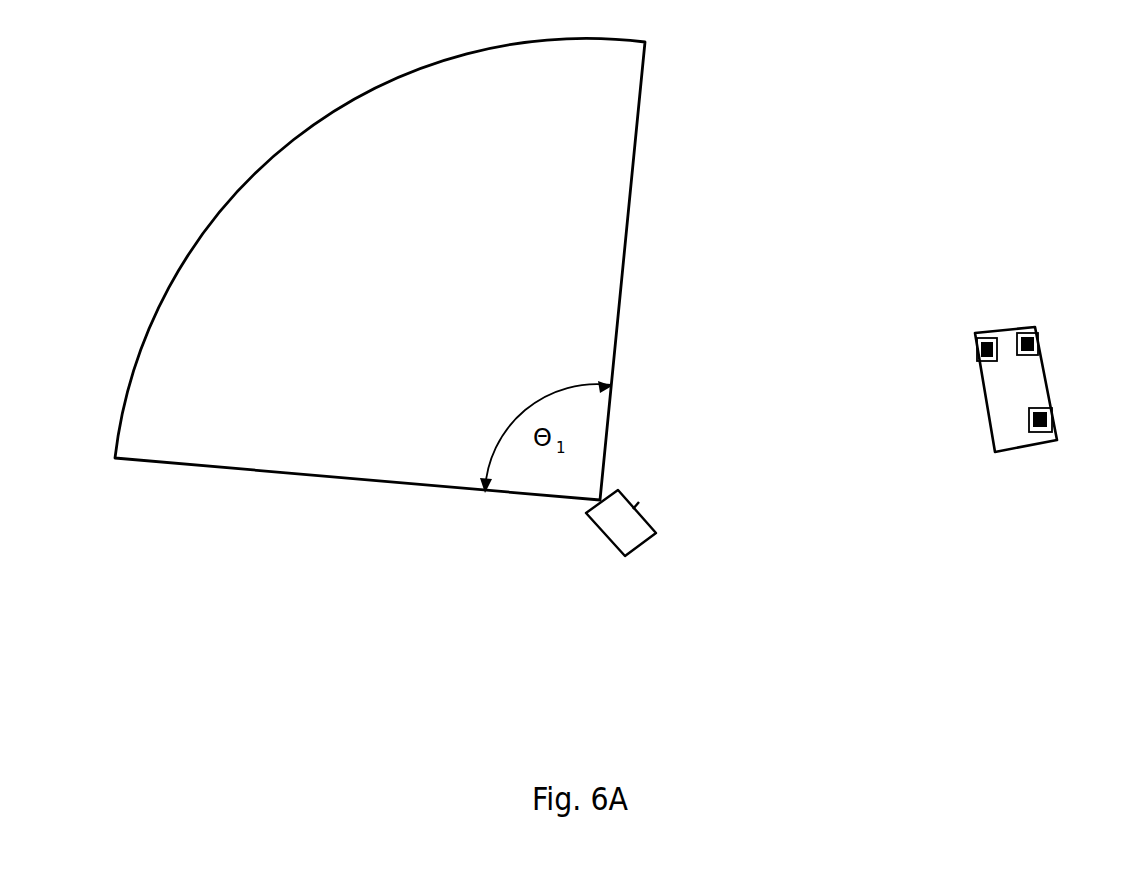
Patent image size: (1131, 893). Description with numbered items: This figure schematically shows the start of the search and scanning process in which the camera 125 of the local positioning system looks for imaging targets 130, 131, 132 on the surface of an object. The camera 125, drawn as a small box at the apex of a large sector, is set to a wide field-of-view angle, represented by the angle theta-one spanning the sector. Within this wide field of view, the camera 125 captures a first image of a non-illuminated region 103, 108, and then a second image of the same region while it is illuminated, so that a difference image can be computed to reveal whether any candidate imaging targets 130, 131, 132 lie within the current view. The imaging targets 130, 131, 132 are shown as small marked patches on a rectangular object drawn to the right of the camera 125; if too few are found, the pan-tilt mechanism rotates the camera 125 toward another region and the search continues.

The camera 125 is at (642, 545).
The non-illuminated region 103 is at (959, 341).
The device body 108 is at (1048, 341).
The imaging target 130 is at (1000, 327).
The imaging target 131 is at (1043, 327).
The imaging target 132 is at (1061, 397).